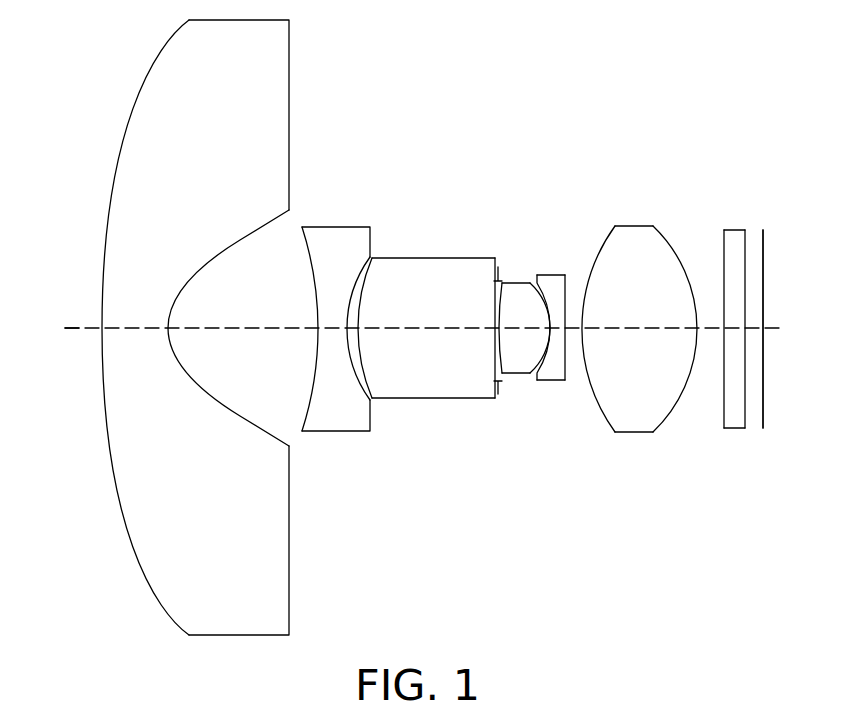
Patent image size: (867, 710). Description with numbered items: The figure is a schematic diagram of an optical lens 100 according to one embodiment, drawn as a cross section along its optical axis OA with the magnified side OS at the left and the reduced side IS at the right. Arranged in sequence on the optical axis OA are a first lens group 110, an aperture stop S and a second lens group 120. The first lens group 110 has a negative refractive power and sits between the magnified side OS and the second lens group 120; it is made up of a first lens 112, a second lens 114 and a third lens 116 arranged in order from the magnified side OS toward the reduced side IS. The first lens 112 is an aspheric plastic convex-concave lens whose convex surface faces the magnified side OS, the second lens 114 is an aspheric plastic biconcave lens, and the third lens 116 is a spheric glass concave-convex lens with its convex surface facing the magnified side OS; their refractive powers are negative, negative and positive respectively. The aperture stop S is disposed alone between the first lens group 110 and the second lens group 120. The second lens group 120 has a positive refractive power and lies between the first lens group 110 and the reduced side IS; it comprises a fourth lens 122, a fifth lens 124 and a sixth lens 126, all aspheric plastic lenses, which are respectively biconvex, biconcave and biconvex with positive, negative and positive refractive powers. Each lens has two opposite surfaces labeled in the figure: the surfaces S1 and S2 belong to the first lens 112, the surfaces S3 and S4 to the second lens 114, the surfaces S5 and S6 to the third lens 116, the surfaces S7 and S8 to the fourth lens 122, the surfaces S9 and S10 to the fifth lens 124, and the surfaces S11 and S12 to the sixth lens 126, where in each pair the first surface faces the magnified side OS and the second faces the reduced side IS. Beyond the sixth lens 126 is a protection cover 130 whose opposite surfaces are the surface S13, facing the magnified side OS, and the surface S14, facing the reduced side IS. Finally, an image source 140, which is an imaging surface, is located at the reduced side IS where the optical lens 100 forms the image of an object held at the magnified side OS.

The optical lens 100 is at (815, 631).
The first lens group 110 is at (475, 564).
The first lens 112 is at (238, 327).
The second lens 114 is at (363, 373).
The third lens 116 is at (422, 372).
The second lens group 120 is at (647, 564).
The fourth lens 122 is at (504, 373).
The fifth lens 124 is at (554, 392).
The sixth lens 126 is at (639, 363).
The protection cover 130 is at (727, 337).
The image source 140 is at (764, 413).
The aperture stop S is at (497, 395).
The surface S1 is at (135, 100).
The surface S2 is at (247, 249).
The surface S3 is at (305, 311).
The surface S4 is at (358, 279).
The surface S5 is at (343, 319).
The surface S6 is at (498, 262).
The surface S7 is at (497, 318).
The surface S8 is at (543, 290).
The surface S9 is at (547, 322).
The surface S10 is at (569, 290).
The surface S11 is at (592, 266).
The surface S12 is at (681, 256).
The surface S13 is at (724, 246).
The surface S14 is at (752, 243).
The magnified side OS is at (56, 332).
The optical axis OA is at (73, 333).
The reduced side IS is at (788, 329).